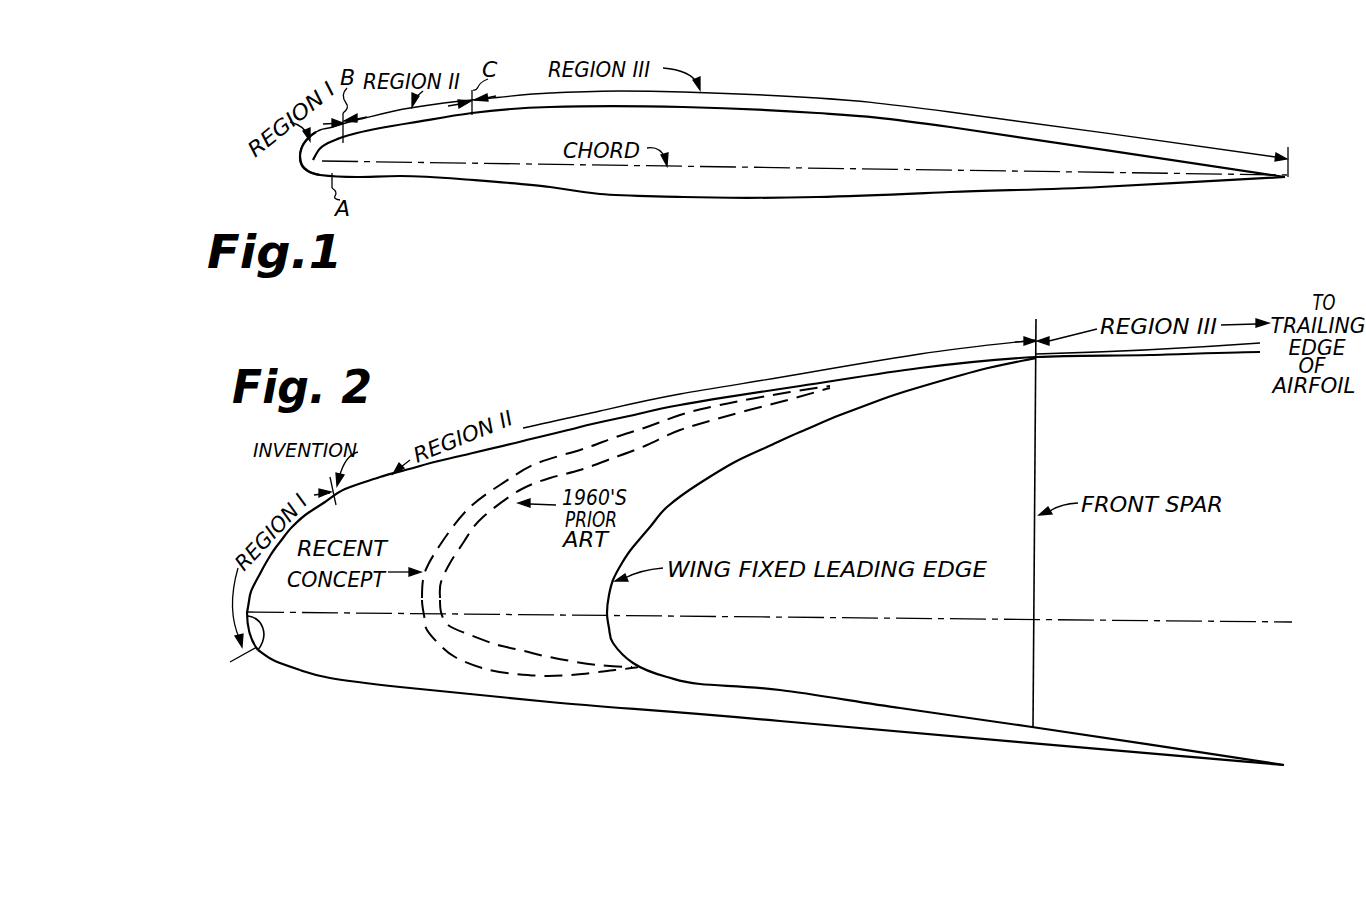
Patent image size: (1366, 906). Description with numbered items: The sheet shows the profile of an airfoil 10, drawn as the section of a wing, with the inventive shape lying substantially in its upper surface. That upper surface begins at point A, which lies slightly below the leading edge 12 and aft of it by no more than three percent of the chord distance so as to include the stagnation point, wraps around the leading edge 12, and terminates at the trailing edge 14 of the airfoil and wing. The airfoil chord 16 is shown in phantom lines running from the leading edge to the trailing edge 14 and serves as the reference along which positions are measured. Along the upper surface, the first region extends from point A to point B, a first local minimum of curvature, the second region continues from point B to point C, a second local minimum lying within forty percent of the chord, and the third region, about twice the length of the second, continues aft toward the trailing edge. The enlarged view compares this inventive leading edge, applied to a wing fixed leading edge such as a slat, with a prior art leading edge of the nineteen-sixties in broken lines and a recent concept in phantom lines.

In FIG. 1, the airfoil 10 is at (853, 105).
In FIG. 2, the airfoil 10 is at (642, 404).
In FIG. 1, the leading edge 12 is at (317, 174).
In FIG. 2, the leading edge 12 is at (257, 651).
In FIG. 1, the trailing edge 14 is at (1290, 176).
In FIG. 1, the airfoil chord 16 is at (908, 156).
In FIG. 2, the airfoil chord 16 is at (932, 623).